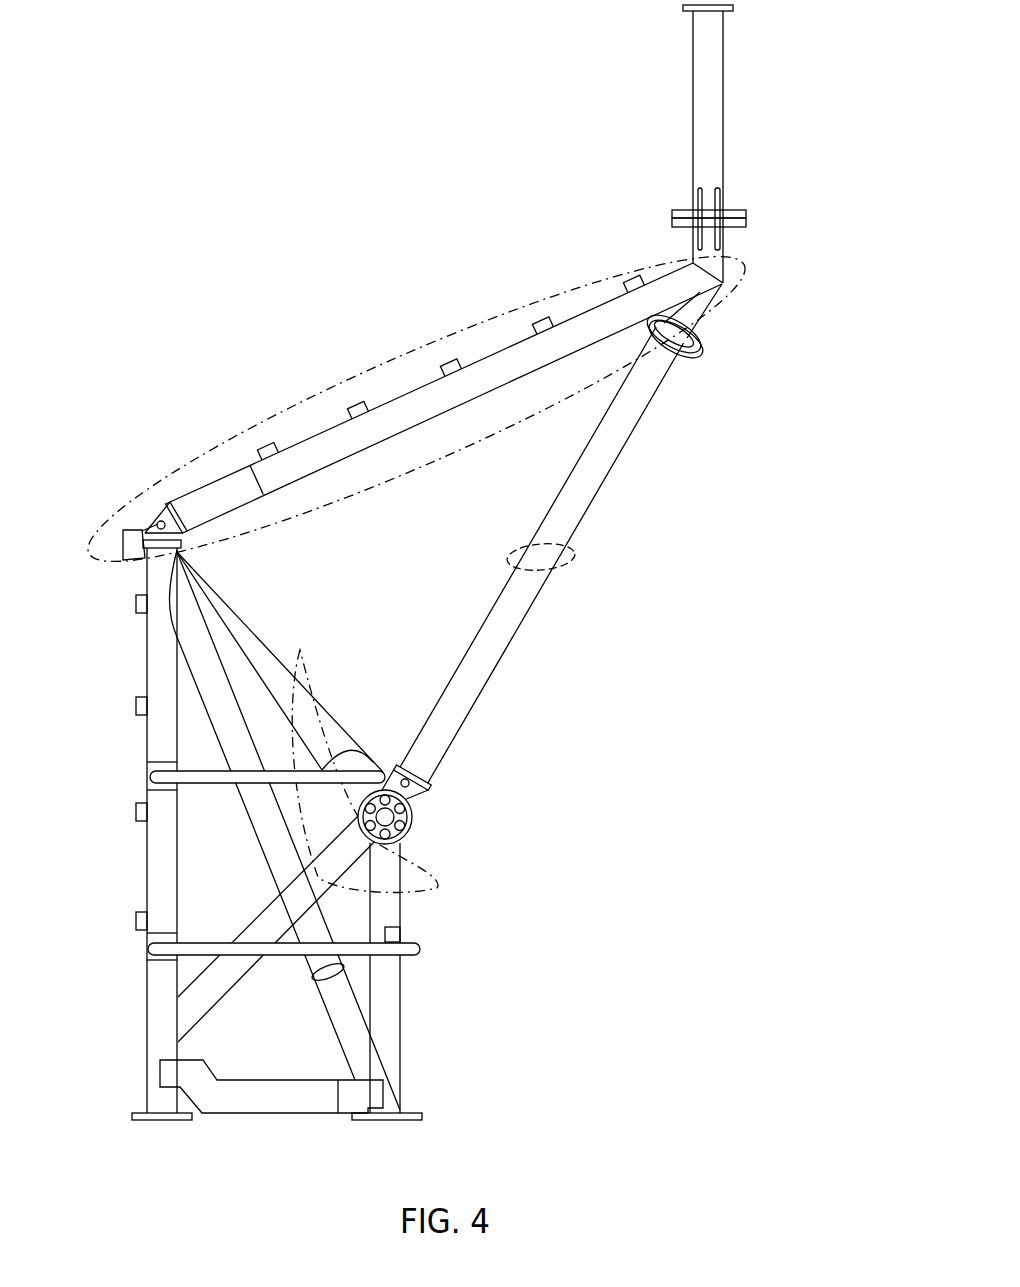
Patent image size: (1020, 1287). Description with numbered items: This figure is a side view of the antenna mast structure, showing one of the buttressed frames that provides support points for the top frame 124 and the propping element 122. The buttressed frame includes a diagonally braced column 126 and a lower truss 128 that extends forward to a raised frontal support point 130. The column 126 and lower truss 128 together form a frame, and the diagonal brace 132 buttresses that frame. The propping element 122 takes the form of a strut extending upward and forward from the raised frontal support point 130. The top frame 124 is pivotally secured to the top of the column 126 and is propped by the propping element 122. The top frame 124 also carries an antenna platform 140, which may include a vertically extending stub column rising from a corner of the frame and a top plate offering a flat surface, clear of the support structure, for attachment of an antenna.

The propping element 122 is at (578, 556).
The top frame 124 is at (394, 357).
The diagonally braced column 126 is at (146, 867).
The lower truss 128 is at (418, 878).
The raised frontal support point 130 is at (413, 819).
The diagonal brace 132 is at (330, 1022).
The antenna platform 140 is at (724, 246).